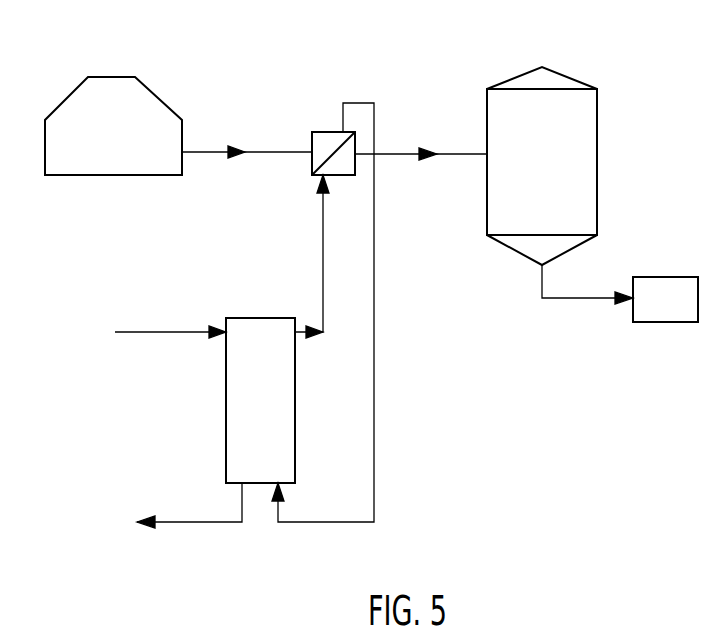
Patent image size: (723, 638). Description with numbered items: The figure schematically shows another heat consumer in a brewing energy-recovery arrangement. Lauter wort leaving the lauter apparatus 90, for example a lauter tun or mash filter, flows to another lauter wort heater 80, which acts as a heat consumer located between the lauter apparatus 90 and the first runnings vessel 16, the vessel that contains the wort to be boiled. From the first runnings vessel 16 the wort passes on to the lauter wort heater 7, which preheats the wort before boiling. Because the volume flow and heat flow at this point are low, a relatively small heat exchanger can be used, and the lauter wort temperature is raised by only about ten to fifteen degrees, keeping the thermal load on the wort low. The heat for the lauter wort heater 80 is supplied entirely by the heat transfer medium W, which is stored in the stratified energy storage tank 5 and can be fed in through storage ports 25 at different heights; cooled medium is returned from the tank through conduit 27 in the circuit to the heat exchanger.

The lauter apparatus 90 is at (102, 77).
The lauter wort heater 80 is at (324, 131).
The first runnings vessel 16 is at (487, 118).
The lauter wort heater 7 is at (678, 277).
The energy storage tank 5 is at (232, 318).
The storage ports 25 is at (196, 334).
The conduit 27 is at (200, 523).